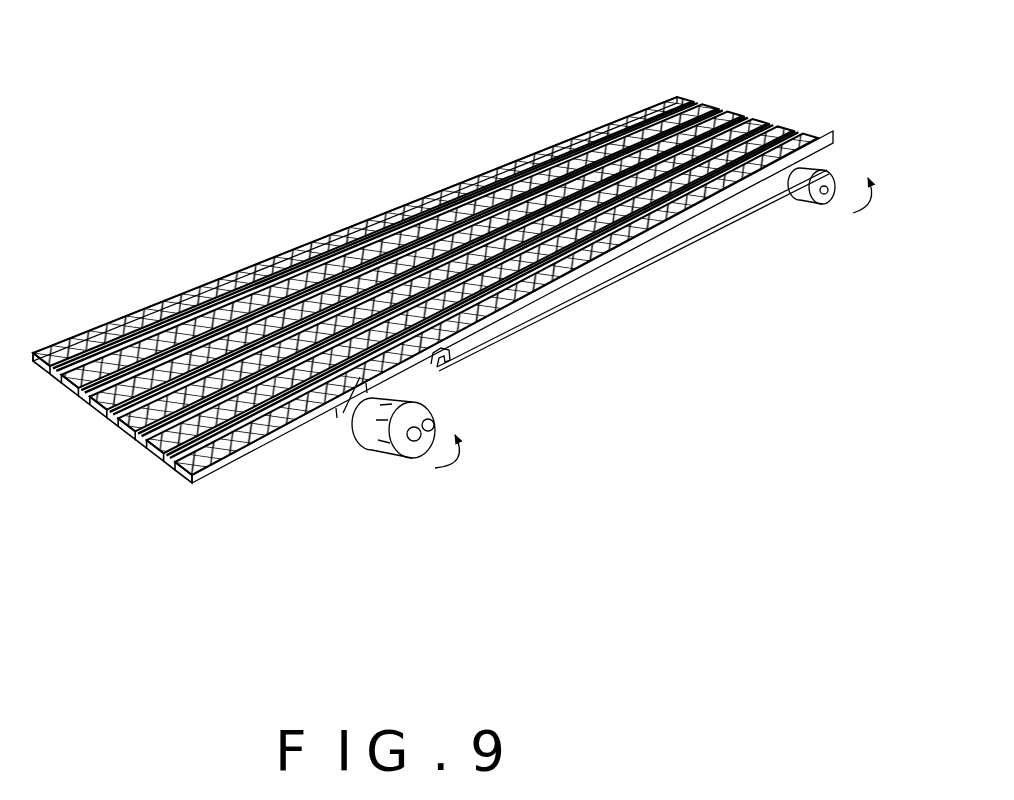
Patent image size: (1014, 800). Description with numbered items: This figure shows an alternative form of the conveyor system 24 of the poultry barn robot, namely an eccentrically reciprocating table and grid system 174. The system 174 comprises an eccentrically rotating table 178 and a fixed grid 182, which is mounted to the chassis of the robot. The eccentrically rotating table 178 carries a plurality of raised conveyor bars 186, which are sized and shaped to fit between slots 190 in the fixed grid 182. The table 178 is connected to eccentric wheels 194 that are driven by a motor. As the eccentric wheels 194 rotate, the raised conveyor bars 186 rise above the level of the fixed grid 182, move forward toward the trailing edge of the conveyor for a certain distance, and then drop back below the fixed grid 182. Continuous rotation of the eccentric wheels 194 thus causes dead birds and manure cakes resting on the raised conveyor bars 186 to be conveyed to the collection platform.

The conveyor system 24 is at (738, 65).
The eccentrically reciprocating table and grid system 174 is at (762, 113).
The eccentrically rotating table 178 is at (302, 423).
The fixed grid 182 is at (480, 343).
The raised conveyor bars 186 is at (284, 292).
The slots 190 is at (38, 365).
The eccentric wheels 194 is at (404, 452).